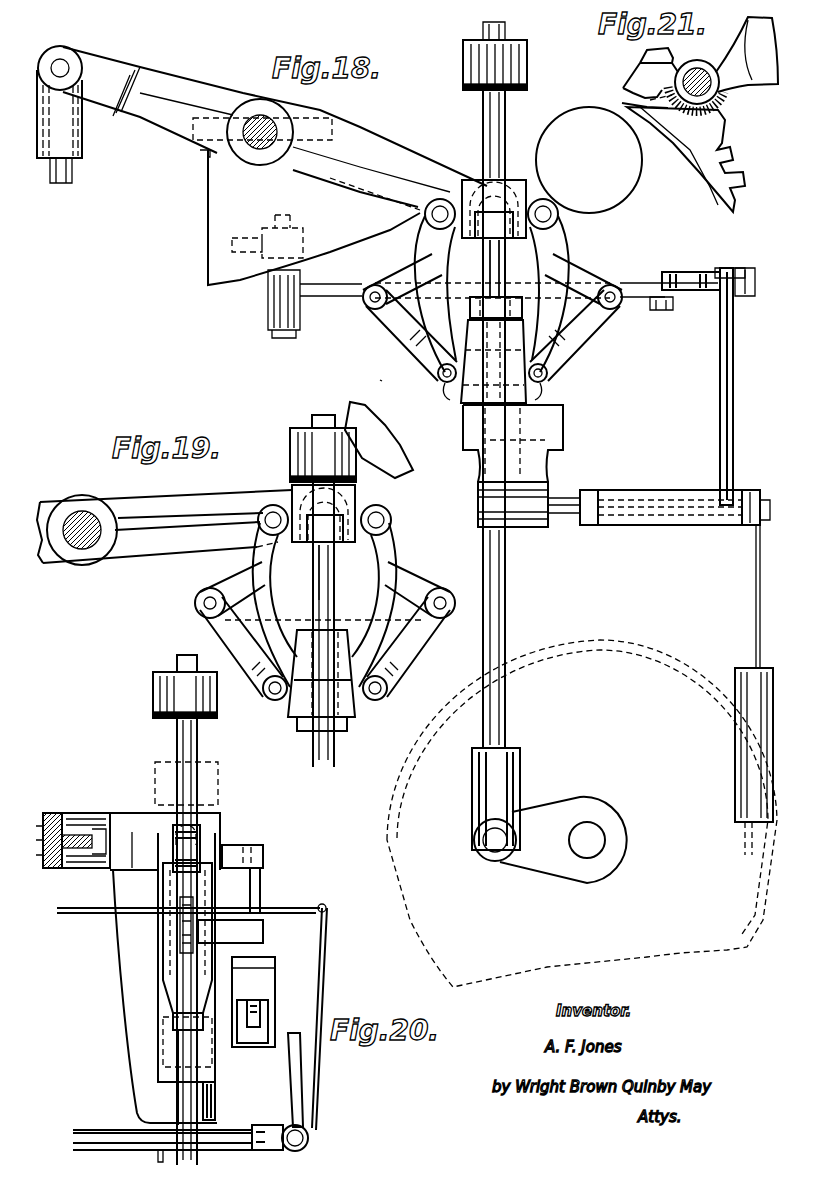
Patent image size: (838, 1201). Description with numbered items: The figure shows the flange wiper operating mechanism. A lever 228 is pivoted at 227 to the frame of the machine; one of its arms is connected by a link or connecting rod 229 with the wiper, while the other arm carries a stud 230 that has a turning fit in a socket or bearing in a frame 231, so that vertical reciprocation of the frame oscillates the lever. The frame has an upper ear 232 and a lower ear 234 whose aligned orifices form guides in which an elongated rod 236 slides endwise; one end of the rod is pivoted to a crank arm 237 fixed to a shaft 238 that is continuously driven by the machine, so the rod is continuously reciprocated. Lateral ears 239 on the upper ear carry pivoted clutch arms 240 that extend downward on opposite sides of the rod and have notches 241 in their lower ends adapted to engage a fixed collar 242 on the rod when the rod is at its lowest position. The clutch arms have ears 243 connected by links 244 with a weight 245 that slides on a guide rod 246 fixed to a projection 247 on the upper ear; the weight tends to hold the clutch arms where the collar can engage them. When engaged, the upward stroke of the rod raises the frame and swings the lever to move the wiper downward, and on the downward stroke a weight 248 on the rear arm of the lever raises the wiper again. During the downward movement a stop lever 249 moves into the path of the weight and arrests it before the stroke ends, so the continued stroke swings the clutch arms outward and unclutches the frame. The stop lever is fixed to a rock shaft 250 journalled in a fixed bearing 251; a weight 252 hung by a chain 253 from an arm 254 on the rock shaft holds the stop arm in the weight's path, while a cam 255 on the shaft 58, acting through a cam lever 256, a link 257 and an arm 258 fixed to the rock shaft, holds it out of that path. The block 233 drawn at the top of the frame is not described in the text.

In FIG. 18, the shaft 58 is at (375, 371).
In FIG. 18, the pivot 227 is at (277, 123).
In FIG. 19, the pivot 227 is at (75, 513).
In FIG. 18, the lever 228 is at (197, 88).
In FIG. 21, the lever 228 is at (638, 80).
In FIG. 20, the lever 228 is at (55, 813).
In FIG. 18, the link or connecting rod 229 is at (72, 180).
In FIG. 21, the stud 230 is at (697, 69).
In FIG. 20, the stud 230 is at (132, 830).
In FIG. 18, the frame 231 is at (520, 262).
In FIG. 20, the frame 231 is at (132, 962).
In FIG. 20, the upper ear 232 is at (222, 827).
In FIG. 18, the head block 233 is at (470, 183).
In FIG. 19, the head block 233 is at (292, 487).
In FIG. 18, the lower ear 234 is at (478, 475).
In FIG. 20, the lower ear 234 is at (215, 1087).
In FIG. 18, the rod 236 is at (507, 133).
In FIG. 19, the rod 236 is at (335, 749).
In FIG. 20, the rod 236 is at (197, 745).
In FIG. 18, the crank arm 237 is at (538, 855).
In FIG. 18, the shaft 238 is at (606, 840).
In FIG. 18, the lateral ears 239 is at (437, 199).
In FIG. 19, the lateral ears 239 is at (262, 503).
In FIG. 20, the lateral ears 239 is at (187, 837).
In FIG. 18, the clutch arms 240 is at (428, 240).
In FIG. 19, the clutch arms 240 is at (263, 547).
In FIG. 20, the clutch arms 240 is at (167, 890).
In FIG. 18, the notches 241 is at (452, 386).
In FIG. 18, the collar 242 is at (515, 296).
In FIG. 19, the collar 242 is at (297, 723).
In FIG. 20, the collar 242 is at (157, 975).
In FIG. 18, the ears 243 is at (412, 305).
In FIG. 19, the ears 243 is at (228, 587).
In FIG. 20, the ears 243 is at (180, 917).
In FIG. 18, the links 244 is at (400, 335).
In FIG. 19, the links 244 is at (225, 633).
In FIG. 20, the links 244 is at (260, 980).
In FIG. 18, the weight 245 is at (560, 345).
In FIG. 19, the weight 245 is at (335, 630).
In FIG. 20, the weight 245 is at (268, 962).
In FIG. 18, the guide rod 246 is at (500, 250).
In FIG. 19, the guide rod 246 is at (330, 566).
In FIG. 20, the guide rod 246 is at (257, 880).
In FIG. 19, the projection 247 is at (313, 542).
In FIG. 20, the projection 247 is at (263, 847).
In FIG. 18, the weight 248 is at (572, 122).
In FIG. 21, the weight 248 is at (760, 29).
In FIG. 19, the weight 248 is at (378, 422).
In FIG. 18, the stop lever 249 is at (550, 451).
In FIG. 20, the stop lever 249 is at (302, 1055).
In FIG. 18, the rock shaft 250 is at (563, 527).
In FIG. 20, the rock shaft 250 is at (308, 1143).
In FIG. 18, the fixed bearing 251 is at (640, 526).
In FIG. 18, the weight 252 is at (738, 752).
In FIG. 18, the chain 253 is at (756, 593).
In FIG. 20, the chain 253 is at (158, 1153).
In FIG. 18, the arm 254 is at (760, 500).
In FIG. 20, the arm 254 is at (240, 1120).
In FIG. 18, the cam 255 is at (380, 250).
In FIG. 18, the cam lever 256 is at (330, 284).
In FIG. 18, the link 257 is at (690, 280).
In FIG. 20, the link 257 is at (294, 907).
In FIG. 18, the arm 258 is at (734, 375).
In FIG. 20, the arm 258 is at (322, 957).